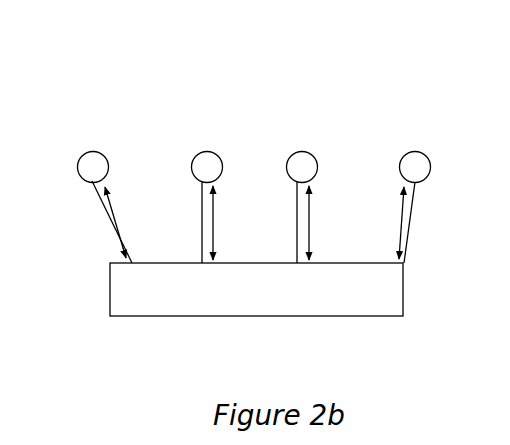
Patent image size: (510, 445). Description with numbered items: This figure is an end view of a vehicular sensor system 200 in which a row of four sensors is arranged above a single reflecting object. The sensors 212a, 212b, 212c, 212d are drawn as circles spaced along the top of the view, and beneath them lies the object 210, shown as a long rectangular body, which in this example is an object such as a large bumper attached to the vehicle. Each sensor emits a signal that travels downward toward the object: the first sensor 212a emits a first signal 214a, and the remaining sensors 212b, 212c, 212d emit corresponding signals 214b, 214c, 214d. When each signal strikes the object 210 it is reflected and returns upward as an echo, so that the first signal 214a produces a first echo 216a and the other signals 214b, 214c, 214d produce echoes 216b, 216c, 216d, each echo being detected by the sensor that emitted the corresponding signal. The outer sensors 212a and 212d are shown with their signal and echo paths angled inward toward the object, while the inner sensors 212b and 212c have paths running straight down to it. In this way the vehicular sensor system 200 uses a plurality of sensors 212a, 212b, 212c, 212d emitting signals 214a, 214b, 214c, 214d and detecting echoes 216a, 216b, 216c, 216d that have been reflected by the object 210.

The vehicular sensor system 200 is at (265, 104).
The object 210 is at (257, 316).
The sensor 212a is at (97, 152).
The sensor 212b is at (203, 152).
The sensor 212c is at (300, 152).
The sensor 212d is at (412, 152).
The first signal 214a is at (112, 235).
The signal 214b is at (202, 240).
The signal 214c is at (297, 243).
The signal 214d is at (396, 248).
The first echo 216a is at (111, 202).
The echo 216b is at (217, 202).
The echo 216c is at (312, 202).
The echo 216d is at (414, 196).